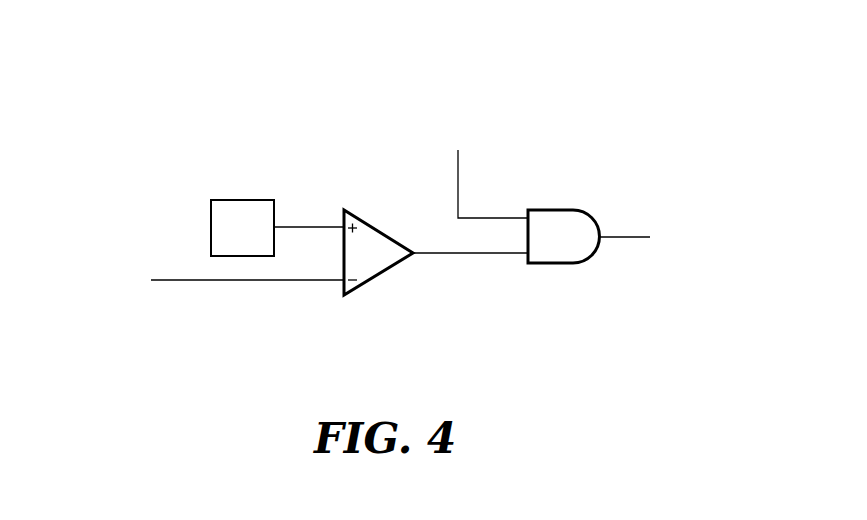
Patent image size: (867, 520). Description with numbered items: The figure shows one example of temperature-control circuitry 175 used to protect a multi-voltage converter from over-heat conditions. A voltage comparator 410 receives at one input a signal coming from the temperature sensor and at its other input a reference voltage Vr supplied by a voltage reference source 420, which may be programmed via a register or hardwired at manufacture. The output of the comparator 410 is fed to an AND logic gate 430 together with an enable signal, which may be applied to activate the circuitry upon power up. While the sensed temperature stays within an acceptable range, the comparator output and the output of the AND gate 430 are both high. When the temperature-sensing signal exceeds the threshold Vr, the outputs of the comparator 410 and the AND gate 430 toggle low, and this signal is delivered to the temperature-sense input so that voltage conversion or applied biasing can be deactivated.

The temperature-control circuitry 175 is at (205, 80).
The voltage comparator 410 is at (378, 252).
The voltage reference source 420 is at (242, 228).
The AND logic gate 430 is at (563, 236).